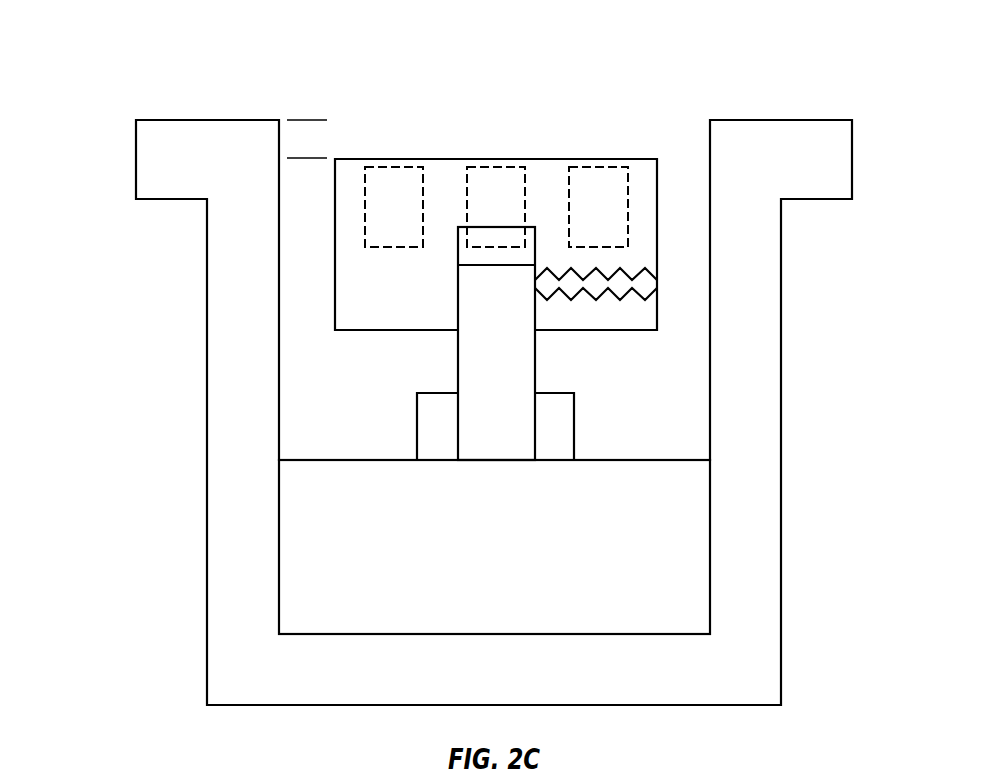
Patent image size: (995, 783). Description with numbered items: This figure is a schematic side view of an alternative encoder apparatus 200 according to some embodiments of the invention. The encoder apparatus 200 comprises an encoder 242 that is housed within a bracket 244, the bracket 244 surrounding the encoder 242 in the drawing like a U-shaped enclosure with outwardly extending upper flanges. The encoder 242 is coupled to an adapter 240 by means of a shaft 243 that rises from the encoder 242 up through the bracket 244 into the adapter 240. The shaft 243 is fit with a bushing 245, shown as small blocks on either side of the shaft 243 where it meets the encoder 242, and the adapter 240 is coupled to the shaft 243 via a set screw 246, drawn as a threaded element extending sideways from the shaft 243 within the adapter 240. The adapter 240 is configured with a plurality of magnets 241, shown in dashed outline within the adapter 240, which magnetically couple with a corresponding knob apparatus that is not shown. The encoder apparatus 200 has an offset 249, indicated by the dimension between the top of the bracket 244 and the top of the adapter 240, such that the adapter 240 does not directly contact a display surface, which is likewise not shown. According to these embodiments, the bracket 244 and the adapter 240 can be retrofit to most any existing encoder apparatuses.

The encoder apparatus 200 is at (148, 44).
The adapter 240 is at (550, 159).
The magnets 241 is at (415, 219).
The encoder 242 is at (518, 569).
The shaft 243 is at (517, 369).
The bracket 244 is at (781, 422).
The bushing 245 is at (574, 427).
The set screw 246 is at (657, 285).
The offset 249 is at (307, 200).